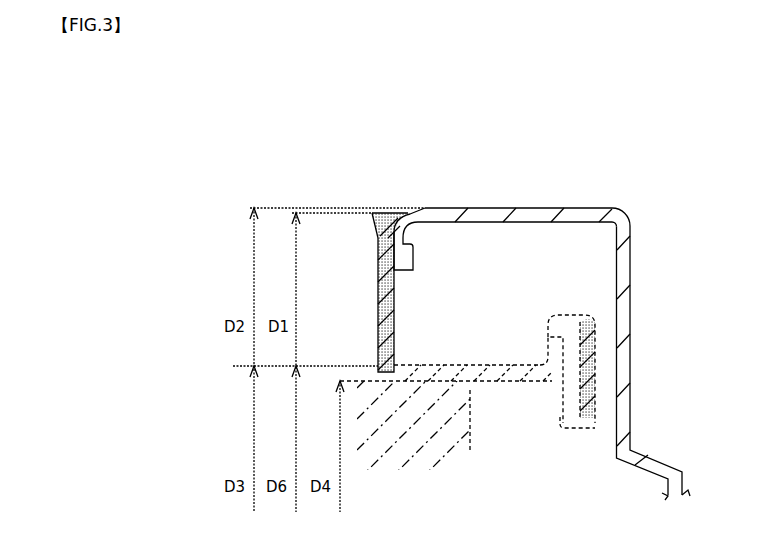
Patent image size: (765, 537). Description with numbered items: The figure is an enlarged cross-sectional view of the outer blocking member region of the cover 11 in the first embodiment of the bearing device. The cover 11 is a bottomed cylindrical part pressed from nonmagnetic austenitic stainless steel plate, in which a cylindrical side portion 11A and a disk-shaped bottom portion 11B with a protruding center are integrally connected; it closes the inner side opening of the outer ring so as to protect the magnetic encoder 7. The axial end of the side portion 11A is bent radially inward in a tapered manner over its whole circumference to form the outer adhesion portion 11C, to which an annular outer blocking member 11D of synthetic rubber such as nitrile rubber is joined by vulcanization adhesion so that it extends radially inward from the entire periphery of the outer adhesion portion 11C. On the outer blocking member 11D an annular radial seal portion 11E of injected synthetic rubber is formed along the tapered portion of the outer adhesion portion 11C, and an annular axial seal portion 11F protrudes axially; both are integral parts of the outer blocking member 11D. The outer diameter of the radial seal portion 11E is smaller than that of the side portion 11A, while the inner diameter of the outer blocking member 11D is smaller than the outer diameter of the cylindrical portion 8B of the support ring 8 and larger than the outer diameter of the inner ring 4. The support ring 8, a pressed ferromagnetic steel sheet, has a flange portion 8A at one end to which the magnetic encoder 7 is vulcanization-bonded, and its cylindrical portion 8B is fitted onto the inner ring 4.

The cover 11 is at (163, 163).
The side portion 11A is at (548, 216).
The bottom portion 11B is at (630, 327).
The outer adhesion portion 11C is at (418, 232).
The outer blocking member 11D is at (378, 320).
The radial seal portion 11E is at (398, 208).
The axial seal portion 11F is at (373, 226).
The support ring 8 is at (544, 440).
The flange portion 8A is at (565, 318).
The cylindrical portion 8B is at (487, 378).
The magnetic encoder 7 is at (600, 399).
The inner ring 4 is at (462, 448).